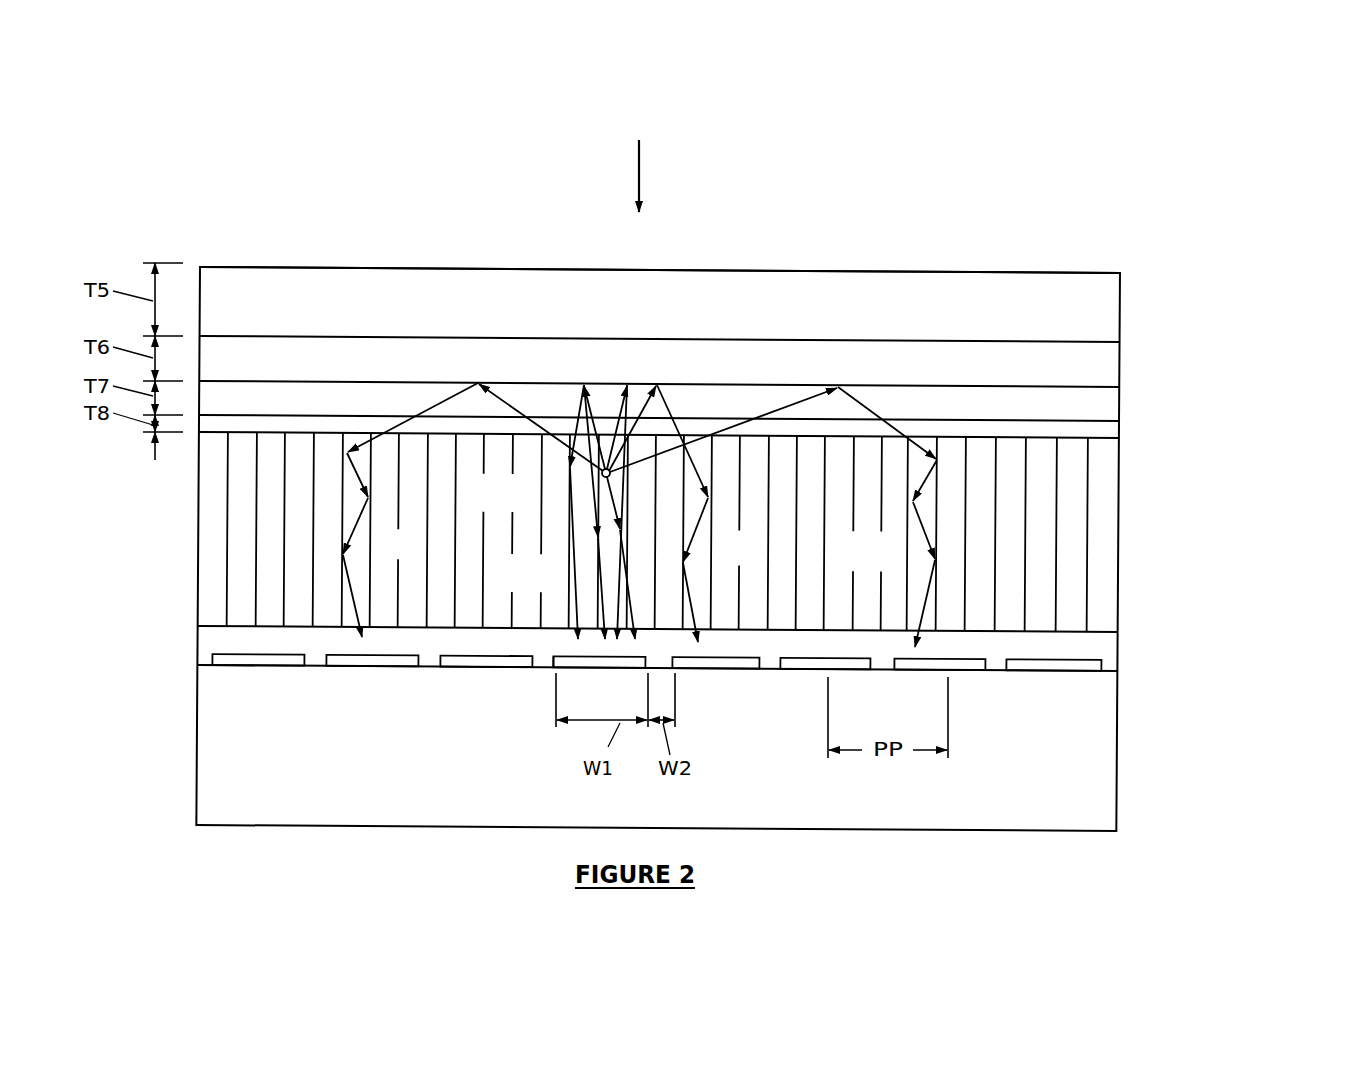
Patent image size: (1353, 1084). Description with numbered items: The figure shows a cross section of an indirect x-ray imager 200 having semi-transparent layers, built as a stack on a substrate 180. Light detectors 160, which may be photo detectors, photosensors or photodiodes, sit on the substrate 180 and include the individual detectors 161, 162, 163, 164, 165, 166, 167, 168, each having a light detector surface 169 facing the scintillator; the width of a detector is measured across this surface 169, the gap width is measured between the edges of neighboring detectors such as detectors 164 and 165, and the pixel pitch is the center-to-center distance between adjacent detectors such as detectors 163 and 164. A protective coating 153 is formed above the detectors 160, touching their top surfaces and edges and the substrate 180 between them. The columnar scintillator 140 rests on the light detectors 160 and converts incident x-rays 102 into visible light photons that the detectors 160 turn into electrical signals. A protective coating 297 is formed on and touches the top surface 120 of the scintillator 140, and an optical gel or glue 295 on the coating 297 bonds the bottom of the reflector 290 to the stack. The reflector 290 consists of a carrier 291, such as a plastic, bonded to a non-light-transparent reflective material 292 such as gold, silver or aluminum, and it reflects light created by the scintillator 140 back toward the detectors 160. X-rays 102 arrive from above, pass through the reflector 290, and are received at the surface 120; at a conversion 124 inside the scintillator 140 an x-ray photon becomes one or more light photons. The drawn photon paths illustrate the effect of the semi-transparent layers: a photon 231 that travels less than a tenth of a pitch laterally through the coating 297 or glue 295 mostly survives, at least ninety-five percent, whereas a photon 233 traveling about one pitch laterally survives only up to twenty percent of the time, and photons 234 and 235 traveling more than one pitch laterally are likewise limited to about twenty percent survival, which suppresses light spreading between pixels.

The x-rays 102 is at (639, 178).
The imager 200 is at (1102, 145).
The reflector 290 is at (1135, 273).
The carrier 291 is at (1065, 307).
The reflective material 292 is at (1013, 357).
The optical gel or glue 295 is at (943, 408).
The top surface of scintillator 120 is at (705, 412).
The protective coating 297 is at (1069, 431).
The scintillator 140 is at (1091, 577).
The conversion 124 is at (602, 475).
The photon 231 is at (572, 562).
The photon 233 is at (697, 532).
The photon 234 is at (350, 533).
The photon 235 is at (923, 535).
The protective coating 153 is at (1102, 651).
The light detectors 160 is at (762, 700).
The detector 161 is at (1039, 668).
The detector 162 is at (972, 667).
The detector 163 is at (863, 663).
The detector 164 is at (720, 663).
The detector 165 is at (608, 662).
The detector 166 is at (478, 664).
The detector 167 is at (368, 663).
The detector 168 is at (250, 660).
The light detector surface 169 is at (558, 658).
The substrate 180 is at (1055, 780).